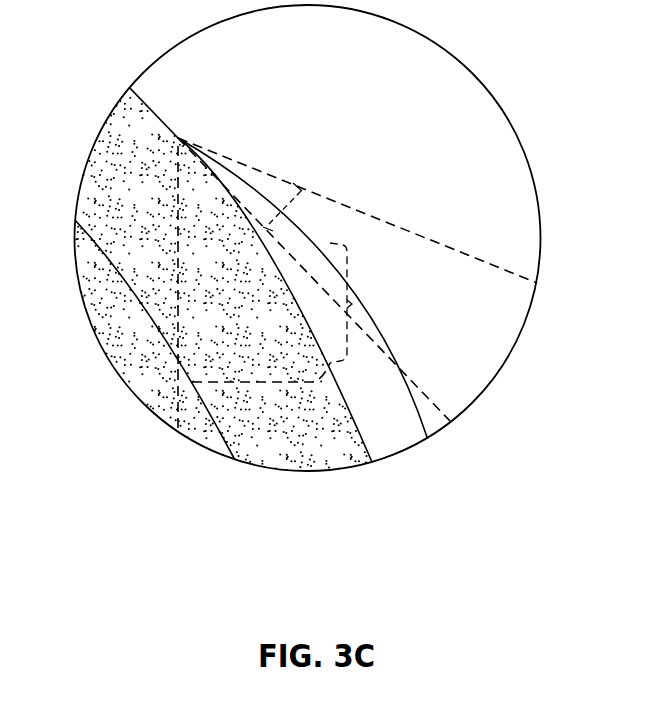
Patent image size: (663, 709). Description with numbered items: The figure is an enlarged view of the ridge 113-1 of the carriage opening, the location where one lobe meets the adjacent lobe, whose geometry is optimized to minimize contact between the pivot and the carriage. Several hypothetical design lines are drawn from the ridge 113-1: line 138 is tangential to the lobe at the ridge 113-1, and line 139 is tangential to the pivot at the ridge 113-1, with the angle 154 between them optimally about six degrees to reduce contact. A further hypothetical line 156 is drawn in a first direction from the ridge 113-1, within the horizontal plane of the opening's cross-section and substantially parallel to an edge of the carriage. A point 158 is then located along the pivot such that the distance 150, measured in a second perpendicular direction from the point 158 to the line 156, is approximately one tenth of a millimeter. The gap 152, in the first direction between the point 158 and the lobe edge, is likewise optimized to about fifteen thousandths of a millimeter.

The ridge 113-1 is at (178, 138).
The angle 154 is at (288, 214).
The line tangential to the lobe 138 is at (382, 222).
The line tangential to the pivot 139 is at (428, 395).
The gap 152 is at (352, 303).
The point along the pivot 158 is at (330, 363).
The hypothetical line 156 is at (178, 295).
The distance 150 is at (254, 390).